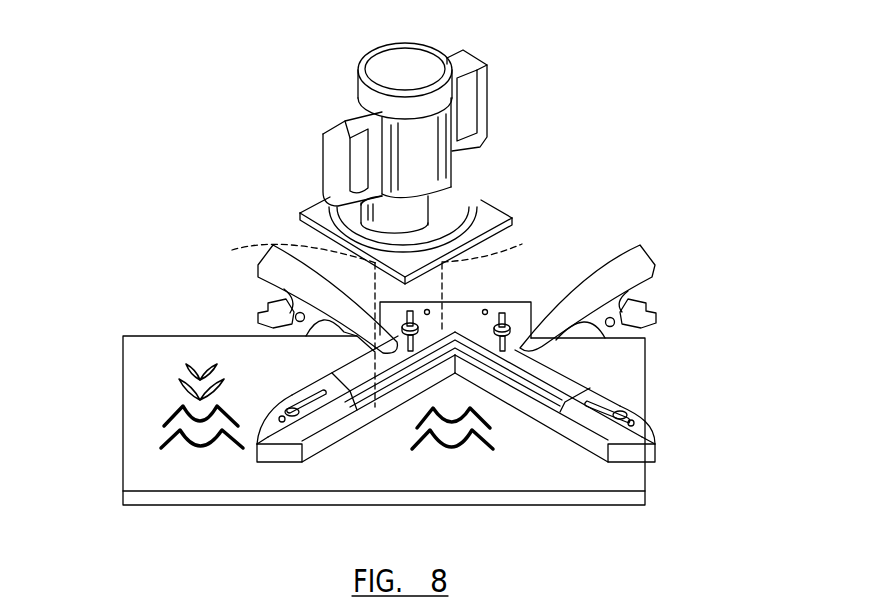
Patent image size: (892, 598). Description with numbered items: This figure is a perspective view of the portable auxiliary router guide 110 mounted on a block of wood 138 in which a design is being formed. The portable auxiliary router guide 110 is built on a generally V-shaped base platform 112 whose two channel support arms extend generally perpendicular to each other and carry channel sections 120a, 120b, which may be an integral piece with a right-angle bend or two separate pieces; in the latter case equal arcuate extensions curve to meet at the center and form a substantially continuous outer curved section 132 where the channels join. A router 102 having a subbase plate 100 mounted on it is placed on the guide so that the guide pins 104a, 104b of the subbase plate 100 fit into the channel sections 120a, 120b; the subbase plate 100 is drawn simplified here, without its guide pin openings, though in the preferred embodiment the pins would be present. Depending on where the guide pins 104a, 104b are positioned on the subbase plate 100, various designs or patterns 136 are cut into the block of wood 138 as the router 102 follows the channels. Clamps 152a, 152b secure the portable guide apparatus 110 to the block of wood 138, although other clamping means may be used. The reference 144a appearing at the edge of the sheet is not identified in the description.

The subbase plate 100 is at (490, 212).
The router 102 is at (432, 141).
The guide pin 104a is at (303, 240).
The guide pin 104b is at (520, 241).
The portable auxiliary router guide 110 is at (657, 430).
The base platform 112 is at (515, 348).
The channel section 120a is at (352, 444).
The channel section 120b is at (522, 393).
The outer curved section 132 is at (492, 345).
The designs or patterns 136 is at (175, 408).
The block of wood 138 is at (148, 468).
The fastener slot 144a is at (238, 589).
The clamp 152a is at (282, 253).
The clamp 152b is at (640, 254).